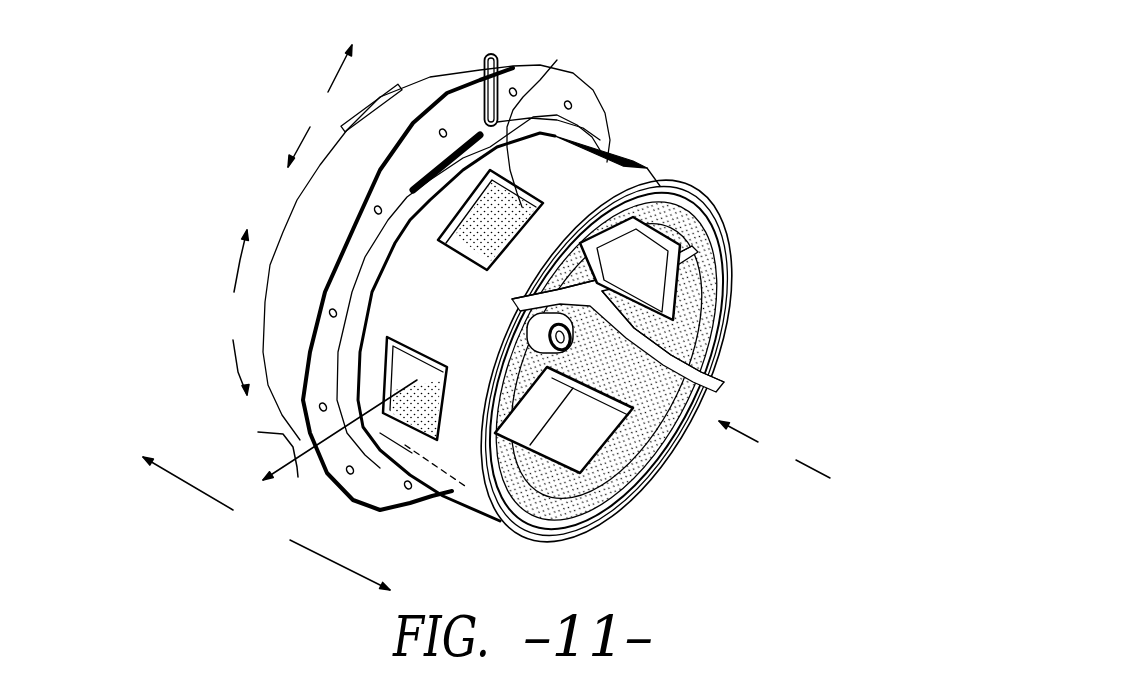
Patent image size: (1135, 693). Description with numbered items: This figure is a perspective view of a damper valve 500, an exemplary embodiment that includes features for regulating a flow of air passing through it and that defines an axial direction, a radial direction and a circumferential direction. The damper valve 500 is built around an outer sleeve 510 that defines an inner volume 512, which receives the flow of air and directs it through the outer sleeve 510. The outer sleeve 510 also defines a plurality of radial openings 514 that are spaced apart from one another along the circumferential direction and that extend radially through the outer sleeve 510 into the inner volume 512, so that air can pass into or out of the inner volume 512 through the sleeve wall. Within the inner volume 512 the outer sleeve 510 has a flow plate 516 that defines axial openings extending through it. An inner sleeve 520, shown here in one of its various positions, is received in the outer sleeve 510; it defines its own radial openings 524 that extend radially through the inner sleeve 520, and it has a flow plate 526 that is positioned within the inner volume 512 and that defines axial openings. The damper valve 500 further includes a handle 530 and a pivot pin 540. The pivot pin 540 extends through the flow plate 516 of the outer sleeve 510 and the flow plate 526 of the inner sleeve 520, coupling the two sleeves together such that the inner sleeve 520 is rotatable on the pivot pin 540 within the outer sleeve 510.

The damper valve 500 is at (494, 304).
The outer sleeve 510 is at (571, 336).
The inner volume 512 is at (571, 452).
The radial openings 514 is at (561, 328).
The flow plate 516 is at (441, 270).
The inner sleeve 520 is at (659, 274).
The radial openings 524 is at (618, 362).
The flow plate 526 is at (708, 336).
The handle 530 is at (454, 71).
The pivot pin 540 is at (661, 319).